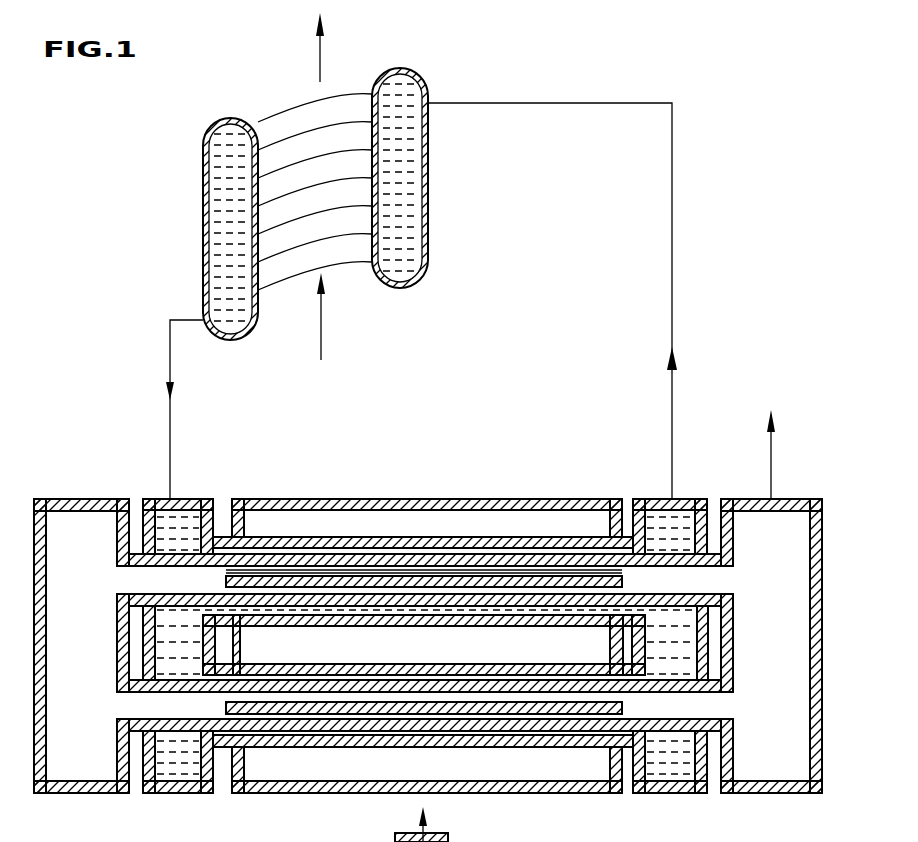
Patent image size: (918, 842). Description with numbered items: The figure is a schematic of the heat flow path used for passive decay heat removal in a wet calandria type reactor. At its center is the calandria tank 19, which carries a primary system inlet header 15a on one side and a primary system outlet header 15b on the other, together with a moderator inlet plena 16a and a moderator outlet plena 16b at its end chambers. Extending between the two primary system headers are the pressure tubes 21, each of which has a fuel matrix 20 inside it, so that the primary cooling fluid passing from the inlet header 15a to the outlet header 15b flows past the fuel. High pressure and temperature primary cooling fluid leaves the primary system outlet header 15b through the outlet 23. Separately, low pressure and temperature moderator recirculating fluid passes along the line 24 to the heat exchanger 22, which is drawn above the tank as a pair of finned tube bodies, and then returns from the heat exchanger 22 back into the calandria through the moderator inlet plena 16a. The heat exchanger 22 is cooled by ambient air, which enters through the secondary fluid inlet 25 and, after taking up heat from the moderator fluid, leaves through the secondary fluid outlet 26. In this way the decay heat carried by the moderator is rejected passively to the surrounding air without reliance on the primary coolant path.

The primary system inlet header 15a is at (81, 646).
The primary system outlet header 15b is at (771, 646).
The moderator inlet plena 16a is at (182, 793).
The moderator outlet plena 16b is at (668, 793).
The calandria tank 19 is at (443, 516).
The fuel matrix 20 is at (212, 577).
The pressure tubes 21 is at (145, 706).
The heat exchanger 22 is at (203, 233).
The primary cooling fluid outlet 23 is at (771, 473).
The line 24 is at (672, 342).
The secondary fluid inlet 25 is at (322, 343).
The secondary fluid outlet 26 is at (322, 62).